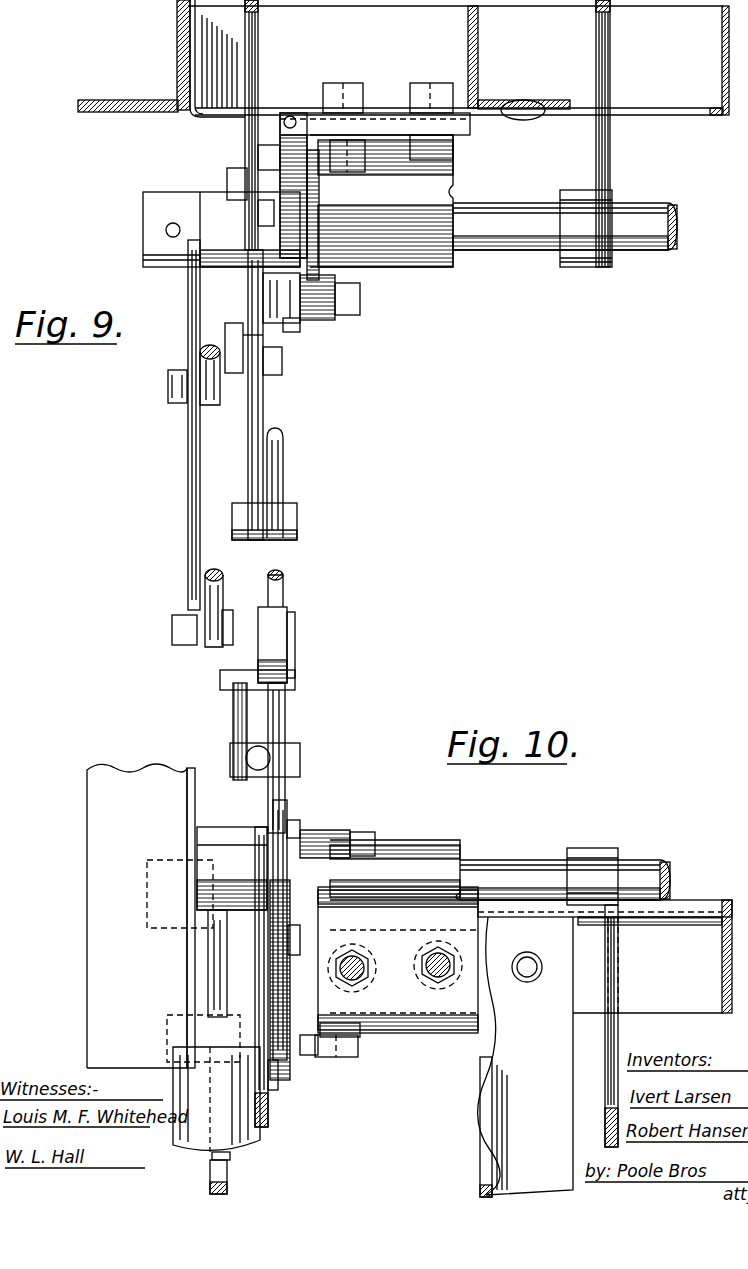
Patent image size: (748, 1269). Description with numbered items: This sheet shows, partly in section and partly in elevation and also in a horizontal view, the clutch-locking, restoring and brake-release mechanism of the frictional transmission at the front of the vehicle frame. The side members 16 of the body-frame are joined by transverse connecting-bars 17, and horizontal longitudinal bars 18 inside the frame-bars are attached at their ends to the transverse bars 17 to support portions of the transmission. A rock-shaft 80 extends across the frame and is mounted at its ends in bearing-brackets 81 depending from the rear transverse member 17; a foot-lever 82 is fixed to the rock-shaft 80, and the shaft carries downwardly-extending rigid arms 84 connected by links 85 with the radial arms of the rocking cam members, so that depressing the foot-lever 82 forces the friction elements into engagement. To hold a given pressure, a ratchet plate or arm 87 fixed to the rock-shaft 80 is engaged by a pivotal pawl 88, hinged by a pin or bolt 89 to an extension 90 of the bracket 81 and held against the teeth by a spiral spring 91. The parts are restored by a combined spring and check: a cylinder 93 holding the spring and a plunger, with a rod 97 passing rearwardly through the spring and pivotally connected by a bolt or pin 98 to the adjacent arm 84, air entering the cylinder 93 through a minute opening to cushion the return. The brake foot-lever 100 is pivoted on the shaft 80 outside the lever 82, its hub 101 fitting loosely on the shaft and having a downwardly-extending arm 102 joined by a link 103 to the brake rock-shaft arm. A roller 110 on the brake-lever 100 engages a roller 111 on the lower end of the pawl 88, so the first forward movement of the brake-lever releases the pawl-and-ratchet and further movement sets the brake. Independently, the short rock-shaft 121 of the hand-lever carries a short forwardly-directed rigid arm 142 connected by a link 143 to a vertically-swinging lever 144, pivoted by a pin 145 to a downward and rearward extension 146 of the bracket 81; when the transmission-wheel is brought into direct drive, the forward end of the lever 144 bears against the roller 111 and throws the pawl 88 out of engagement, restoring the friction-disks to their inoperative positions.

In FIG. 9, the side members of the body-frame 16 is at (130, 100).
In FIG. 10, the side members of the body-frame 16 is at (141, 916).
In FIG. 9, the transverse connecting-bars 17 is at (458, 60).
In FIG. 10, the transverse connecting-bars 17 is at (605, 956).
In FIG. 9, the horizontal longitudinal bars 18 is at (478, 38).
In FIG. 10, the horizontal longitudinal bars 18 is at (223, 963).
In FIG. 9, the rock-shaft 80 is at (645, 215).
In FIG. 10, the rock-shaft 80 is at (522, 866).
In FIG. 9, the bearing-brackets 81 is at (448, 160).
In FIG. 10, the bearing-brackets 81 is at (420, 852).
In FIG. 9, the foot-lever 82 is at (610, 158).
In FIG. 10, the foot-lever 82 is at (598, 850).
In FIG. 9, the rigid arms 84 is at (188, 507).
In FIG. 9, the links 85 is at (205, 600).
In FIG. 10, the links 85 is at (227, 1182).
In FIG. 9, the ratchet plate or arm 87 is at (318, 245).
In FIG. 10, the ratchet plate or arm 87 is at (340, 948).
In FIG. 9, the pivotal pawl 88 is at (288, 125).
In FIG. 10, the pivotal pawl 88 is at (292, 1067).
In FIG. 9, the pin or bolt 89 is at (355, 172).
In FIG. 10, the pin or bolt 89 is at (358, 1050).
In FIG. 10, the extension of the bracket 90 is at (328, 1025).
In FIG. 9, the spiral spring 91 is at (308, 112).
In FIG. 10, the spiral spring 91 is at (318, 1040).
In FIG. 10, the cylinder 93 is at (216, 1099).
In FIG. 9, the rod 97 is at (200, 357).
In FIG. 10, the rod 97 is at (230, 1157).
In FIG. 9, the bolt or pin 98 is at (168, 387).
In FIG. 9, the brake foot-lever 100 is at (258, 45).
In FIG. 10, the brake foot-lever 100 is at (262, 943).
In FIG. 9, the hub of the foot-lever 101 is at (208, 200).
In FIG. 10, the hub of the foot-lever 101 is at (228, 856).
In FIG. 9, the downwardly-extending arm 102 is at (263, 402).
In FIG. 10, the downwardly-extending arm 102 is at (273, 832).
In FIG. 9, the link 103 is at (283, 455).
In FIG. 10, the link 103 is at (285, 724).
In FIG. 9, the roller 110 is at (266, 153).
In FIG. 10, the roller 110 is at (282, 948).
In FIG. 9, the roller 111 is at (266, 212).
In FIG. 10, the roller 111 is at (278, 1078).
In FIG. 10, the short rock-shaft 121 is at (295, 637).
In FIG. 9, the short forwardly-directed rigid arm 142 is at (232, 338).
In FIG. 10, the short forwardly-directed rigid arm 142 is at (233, 718).
In FIG. 9, the link 143 is at (250, 316).
In FIG. 10, the link 143 is at (248, 752).
In FIG. 9, the vertically-swinging lever 144 is at (290, 320).
In FIG. 10, the vertically-swinging lever 144 is at (283, 812).
In FIG. 9, the pin 145 is at (360, 297).
In FIG. 10, the pin 145 is at (368, 832).
In FIG. 9, the downward and rearward extension of the bracket 146 is at (337, 283).
In FIG. 10, the downward and rearward extension of the bracket 146 is at (318, 830).